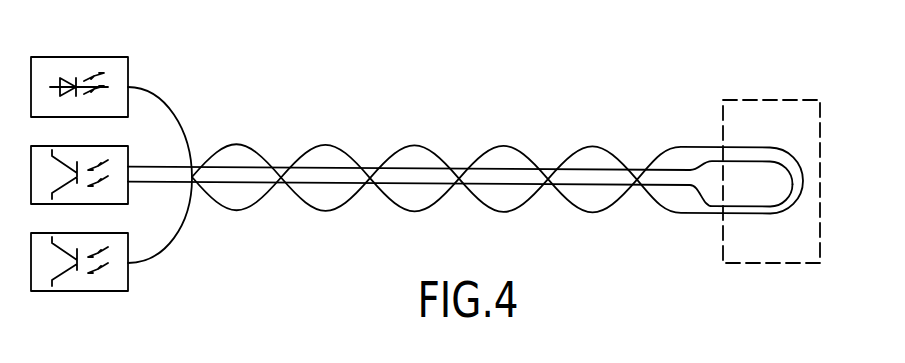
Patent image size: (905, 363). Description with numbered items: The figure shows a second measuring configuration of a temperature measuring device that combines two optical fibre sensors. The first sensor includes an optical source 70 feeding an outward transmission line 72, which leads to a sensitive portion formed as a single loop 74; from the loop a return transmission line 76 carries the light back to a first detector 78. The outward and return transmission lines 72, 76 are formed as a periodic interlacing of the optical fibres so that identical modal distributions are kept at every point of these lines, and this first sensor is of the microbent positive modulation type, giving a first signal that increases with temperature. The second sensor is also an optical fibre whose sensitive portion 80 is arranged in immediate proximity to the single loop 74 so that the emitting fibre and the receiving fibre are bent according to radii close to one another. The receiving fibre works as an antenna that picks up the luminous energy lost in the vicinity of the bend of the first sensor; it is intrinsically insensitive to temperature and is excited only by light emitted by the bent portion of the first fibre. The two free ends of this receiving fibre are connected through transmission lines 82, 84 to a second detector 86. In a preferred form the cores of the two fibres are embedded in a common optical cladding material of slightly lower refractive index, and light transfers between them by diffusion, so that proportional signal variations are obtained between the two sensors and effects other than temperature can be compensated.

The optical source 70 is at (72, 56).
The outward transmission line 72 is at (318, 143).
The sensitive portion with a single loop 74 is at (778, 146).
The return transmission line 76 is at (318, 212).
The first detector 78 is at (80, 293).
The sensitive portion of the second sensor 80 is at (767, 208).
The transmission line 82 is at (502, 170).
The transmission line 84 is at (521, 185).
The second detector 86 is at (128, 155).